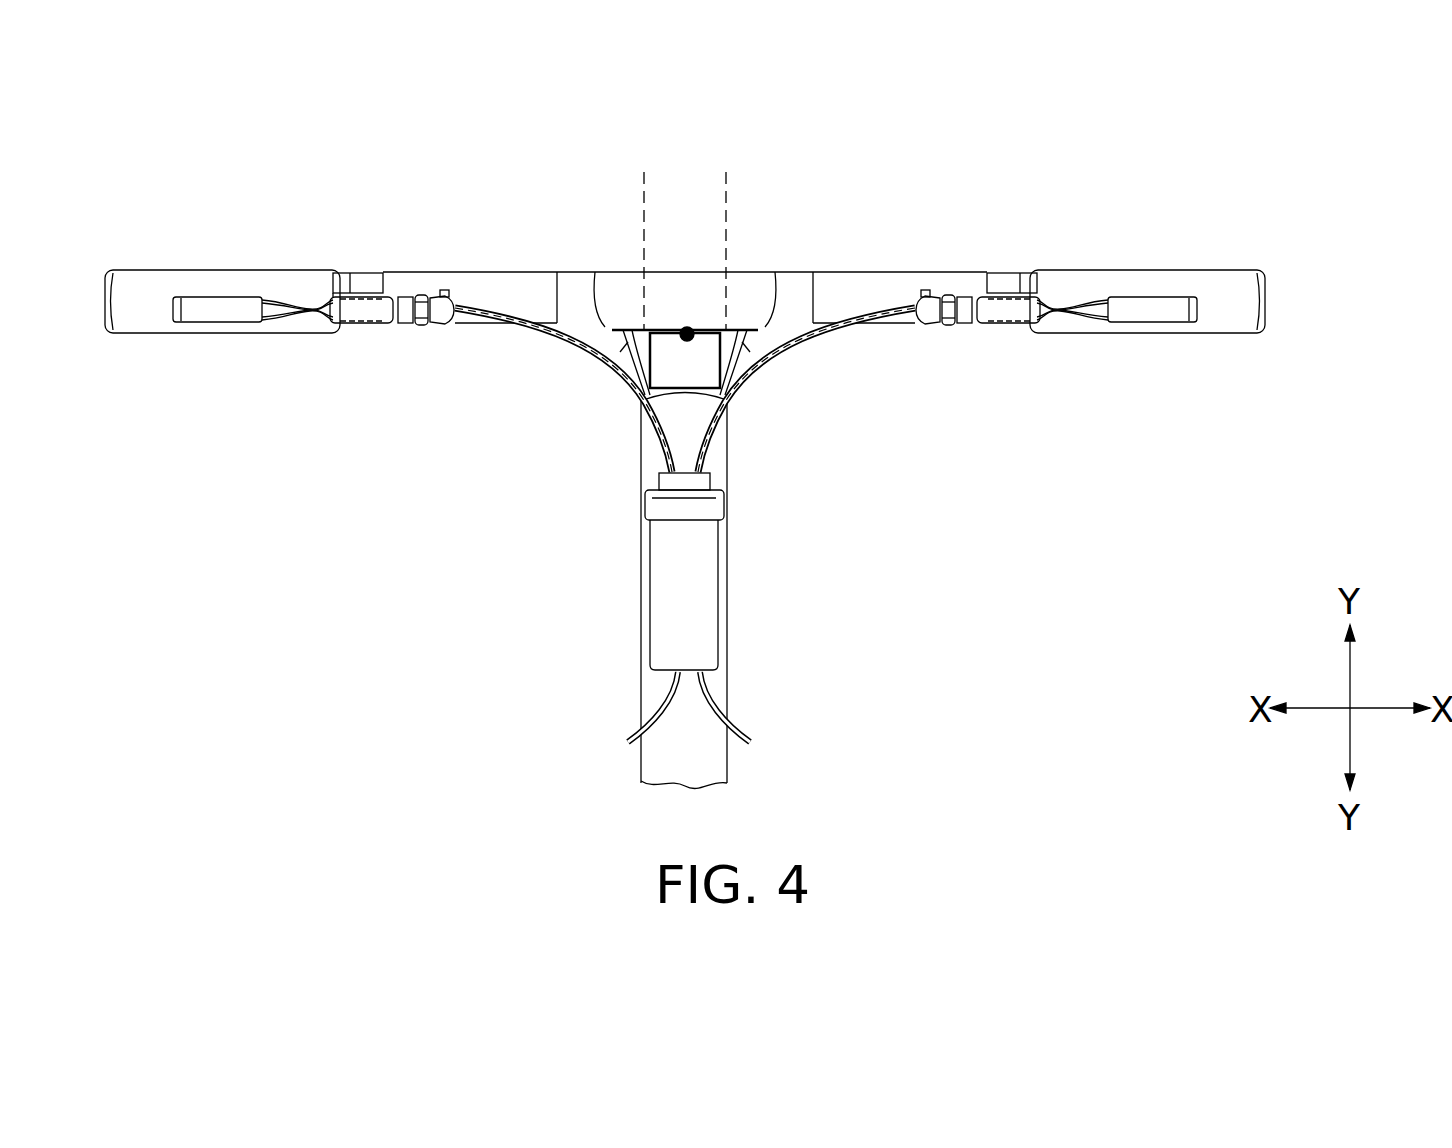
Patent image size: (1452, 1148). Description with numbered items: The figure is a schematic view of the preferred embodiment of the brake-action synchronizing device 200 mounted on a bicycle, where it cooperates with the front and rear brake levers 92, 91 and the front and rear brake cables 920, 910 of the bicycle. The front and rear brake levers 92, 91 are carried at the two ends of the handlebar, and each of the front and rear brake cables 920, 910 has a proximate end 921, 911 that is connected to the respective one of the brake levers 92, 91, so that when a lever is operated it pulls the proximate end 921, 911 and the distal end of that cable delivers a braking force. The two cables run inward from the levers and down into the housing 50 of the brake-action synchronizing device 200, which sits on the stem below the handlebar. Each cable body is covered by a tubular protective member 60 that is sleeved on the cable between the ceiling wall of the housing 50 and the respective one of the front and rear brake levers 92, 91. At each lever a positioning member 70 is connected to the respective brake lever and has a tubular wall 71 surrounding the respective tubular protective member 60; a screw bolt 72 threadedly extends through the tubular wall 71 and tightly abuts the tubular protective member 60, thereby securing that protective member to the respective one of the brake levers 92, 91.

The brake-action synchronizing device 200 is at (988, 235).
The housing 50 is at (638, 508).
The tubular protective member 60 is at (595, 272).
The positioning member 70 is at (433, 332).
The tubular wall 71 is at (450, 325).
The screw bolt 72 is at (445, 291).
The rear brake lever 91 is at (230, 318).
The front brake lever 92 is at (1140, 318).
The rear brake cable 910 is at (641, 230).
The proximate end of the rear brake cable 911 is at (462, 297).
The front brake cable 920 is at (731, 230).
The proximate end of the front brake cable 921 is at (905, 300).